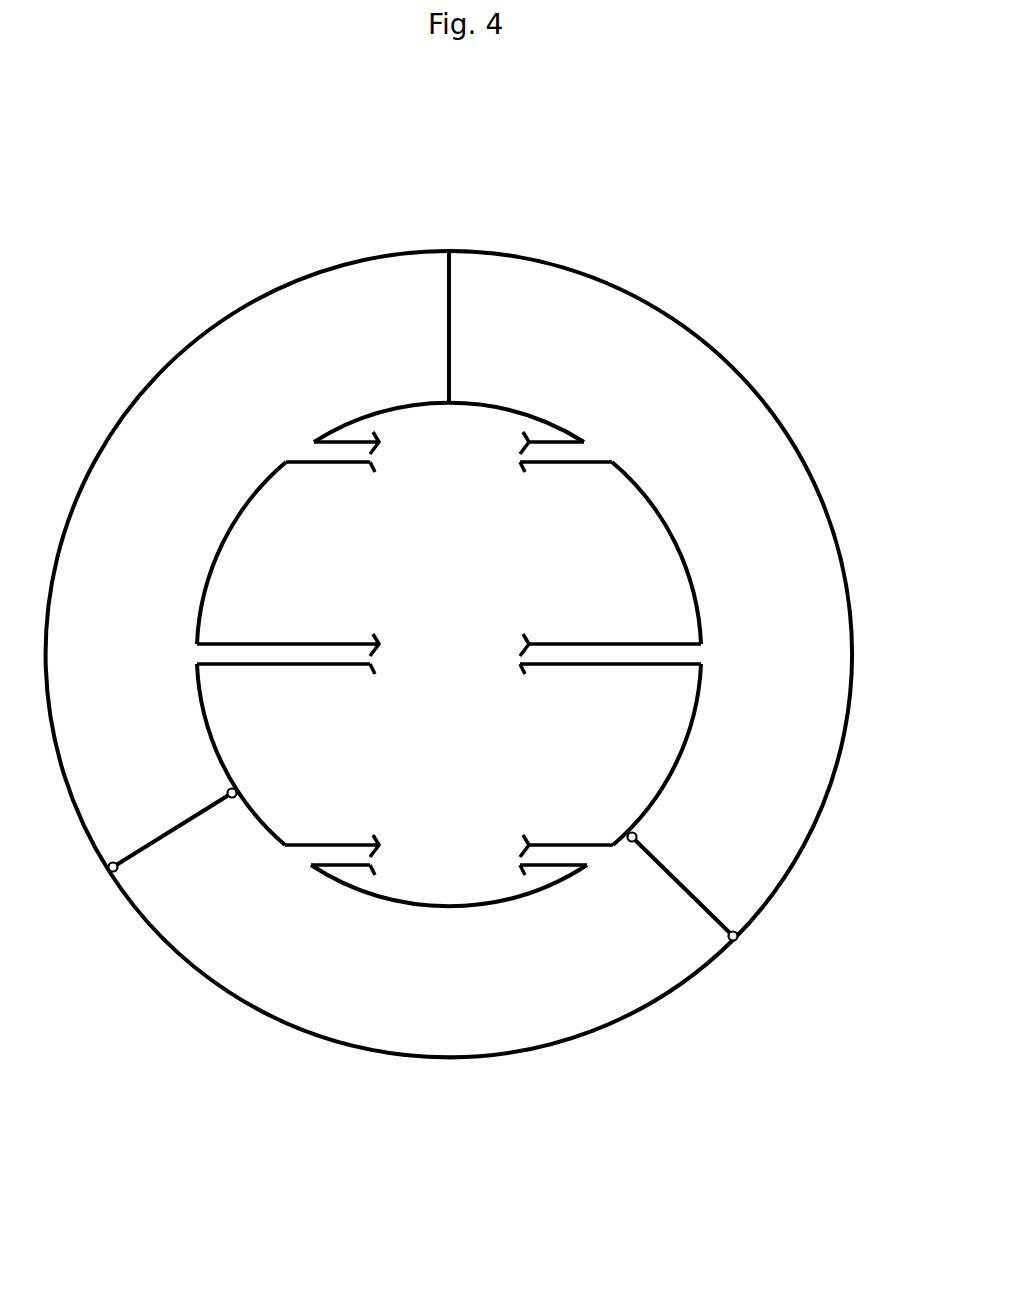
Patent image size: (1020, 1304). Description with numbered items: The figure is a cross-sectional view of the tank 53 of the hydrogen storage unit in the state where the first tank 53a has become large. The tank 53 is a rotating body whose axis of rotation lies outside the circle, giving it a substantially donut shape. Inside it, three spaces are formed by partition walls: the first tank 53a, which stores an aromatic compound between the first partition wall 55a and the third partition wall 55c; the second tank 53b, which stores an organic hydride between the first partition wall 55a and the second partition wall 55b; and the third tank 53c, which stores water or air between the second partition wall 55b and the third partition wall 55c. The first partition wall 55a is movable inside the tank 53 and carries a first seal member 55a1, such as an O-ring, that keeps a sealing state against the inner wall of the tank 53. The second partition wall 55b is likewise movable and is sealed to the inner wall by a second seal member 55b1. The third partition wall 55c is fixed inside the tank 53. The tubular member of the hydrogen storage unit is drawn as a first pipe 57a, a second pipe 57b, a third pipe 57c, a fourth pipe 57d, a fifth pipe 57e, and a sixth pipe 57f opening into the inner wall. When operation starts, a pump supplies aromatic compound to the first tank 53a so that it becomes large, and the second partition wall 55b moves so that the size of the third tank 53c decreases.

The tank 53 is at (795, 218).
The first tank 53a is at (813, 481).
The second tank 53b is at (583, 1036).
The third tank 53c is at (173, 361).
The first partition wall 55a is at (678, 881).
The first seal member 55a1 is at (637, 834).
The second partition wall 55b is at (167, 832).
The second seal member 55b1 is at (233, 798).
The third partition wall 55c is at (452, 322).
The first pipe 57a is at (563, 465).
The second pipe 57b is at (597, 642).
The third pipe 57c is at (563, 845).
The fourth pipe 57d is at (333, 845).
The fifth pipe 57e is at (277, 642).
The sixth pipe 57f is at (347, 465).